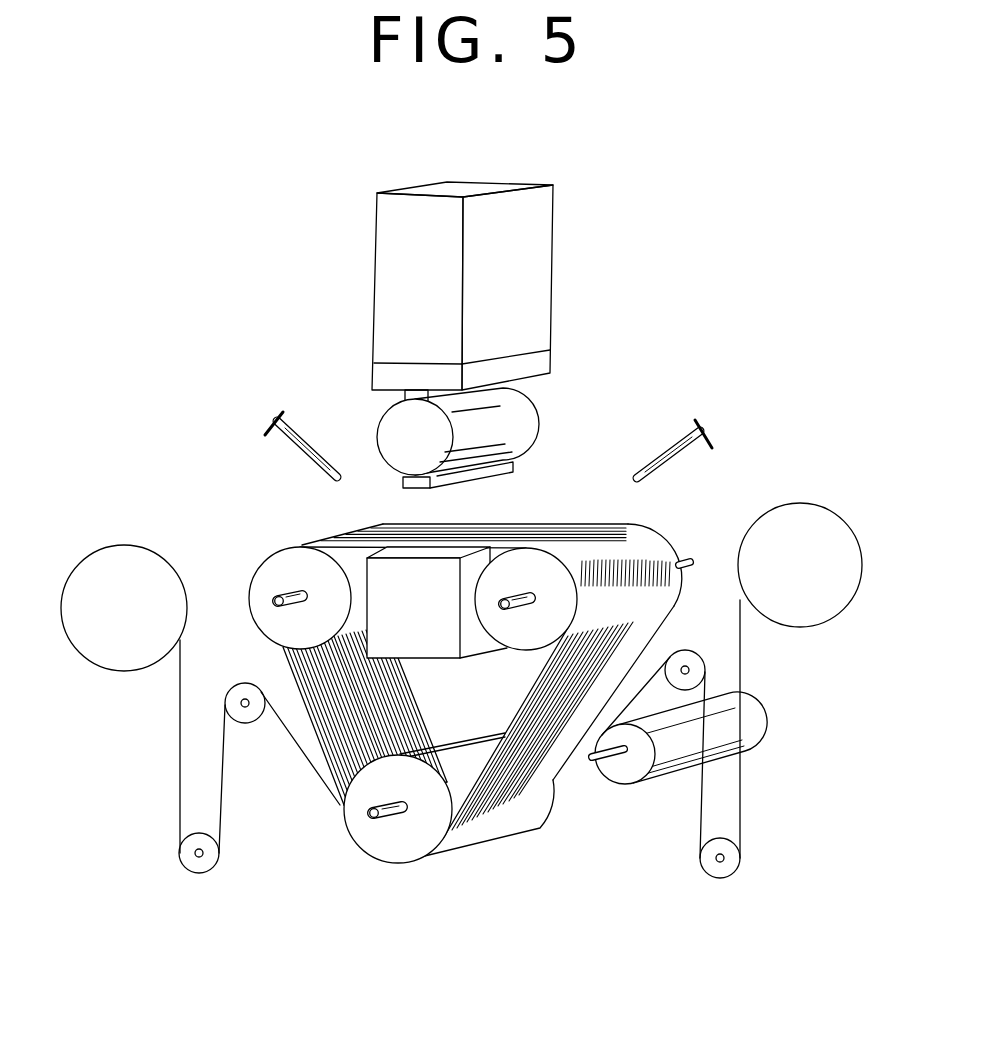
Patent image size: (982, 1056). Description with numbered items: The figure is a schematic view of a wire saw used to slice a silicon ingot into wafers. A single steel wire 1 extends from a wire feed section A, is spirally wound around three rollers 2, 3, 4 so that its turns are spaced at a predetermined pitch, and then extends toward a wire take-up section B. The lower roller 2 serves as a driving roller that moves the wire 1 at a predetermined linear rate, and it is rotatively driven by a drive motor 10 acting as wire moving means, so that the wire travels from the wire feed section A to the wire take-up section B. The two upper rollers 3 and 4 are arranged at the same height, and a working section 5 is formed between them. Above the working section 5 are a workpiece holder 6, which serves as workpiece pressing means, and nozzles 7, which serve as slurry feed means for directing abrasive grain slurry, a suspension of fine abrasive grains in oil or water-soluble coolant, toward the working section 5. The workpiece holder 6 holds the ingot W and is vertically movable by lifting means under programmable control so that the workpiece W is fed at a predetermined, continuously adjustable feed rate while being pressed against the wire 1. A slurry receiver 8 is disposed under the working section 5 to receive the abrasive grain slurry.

The steel wire 1 is at (515, 770).
The lower roller 2 is at (392, 847).
The upper roller 3 is at (270, 570).
The upper roller 4 is at (538, 575).
The working section 5 is at (492, 518).
The workpiece holder 6 is at (527, 280).
The nozzles 7 is at (303, 443).
The slurry receiver 8 is at (402, 625).
The drive motor 10 is at (672, 770).
The ingot W is at (522, 415).
The wire feed section A is at (732, 690).
The wire take-up section B is at (200, 709).